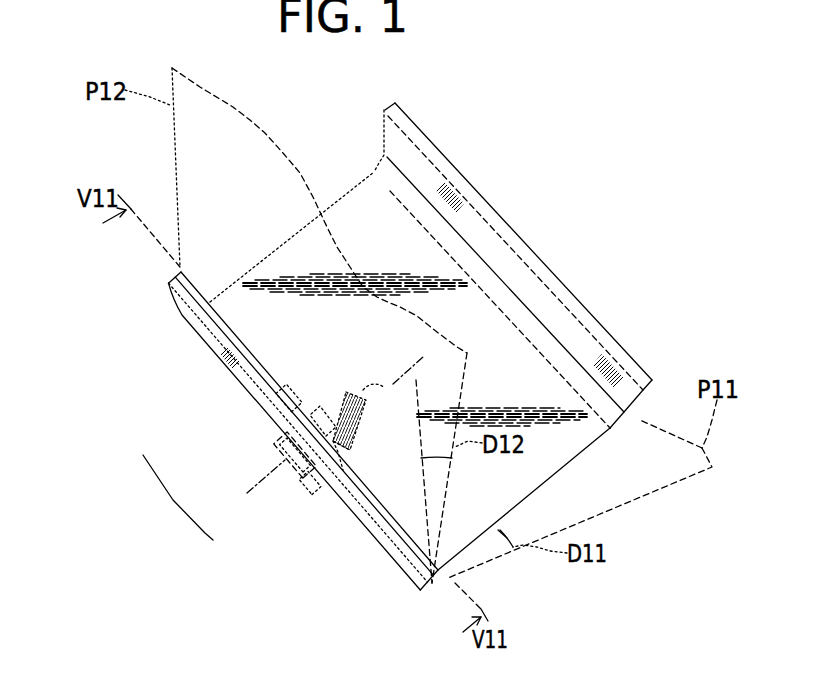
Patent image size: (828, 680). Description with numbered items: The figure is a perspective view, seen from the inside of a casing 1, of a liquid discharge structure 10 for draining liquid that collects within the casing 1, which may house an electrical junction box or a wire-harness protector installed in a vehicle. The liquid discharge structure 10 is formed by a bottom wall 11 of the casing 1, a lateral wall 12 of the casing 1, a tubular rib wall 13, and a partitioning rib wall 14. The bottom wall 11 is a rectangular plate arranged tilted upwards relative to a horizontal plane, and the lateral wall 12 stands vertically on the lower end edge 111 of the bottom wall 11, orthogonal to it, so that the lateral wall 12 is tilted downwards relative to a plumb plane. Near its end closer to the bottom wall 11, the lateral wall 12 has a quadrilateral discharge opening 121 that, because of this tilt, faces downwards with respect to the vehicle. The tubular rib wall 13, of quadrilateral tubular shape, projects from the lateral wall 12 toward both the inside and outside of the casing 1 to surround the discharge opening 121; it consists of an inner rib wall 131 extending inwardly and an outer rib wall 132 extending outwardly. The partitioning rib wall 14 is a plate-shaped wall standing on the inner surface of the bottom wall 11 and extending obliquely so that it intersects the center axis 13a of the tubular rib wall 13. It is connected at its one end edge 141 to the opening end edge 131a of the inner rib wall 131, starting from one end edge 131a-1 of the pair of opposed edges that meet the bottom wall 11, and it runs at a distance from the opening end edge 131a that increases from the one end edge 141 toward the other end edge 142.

The casing 1 is at (425, 106).
The liquid discharge structure 10 is at (180, 330).
The bottom wall 11 is at (519, 265).
The lower end edge 111 is at (402, 602).
The lateral wall 12 is at (297, 431).
The discharge opening 121 is at (262, 462).
The tubular rib wall 13 is at (173, 500).
The center axis 13a is at (388, 347).
The inner rib wall 131 is at (226, 426).
The opening end edge 131a is at (333, 387).
The one end edge 131a-1 is at (334, 498).
The outer rib wall 132 is at (264, 505).
The partitioning rib wall 14 is at (371, 421).
The one end edge 141 is at (371, 455).
The another end edge 142 is at (404, 389).